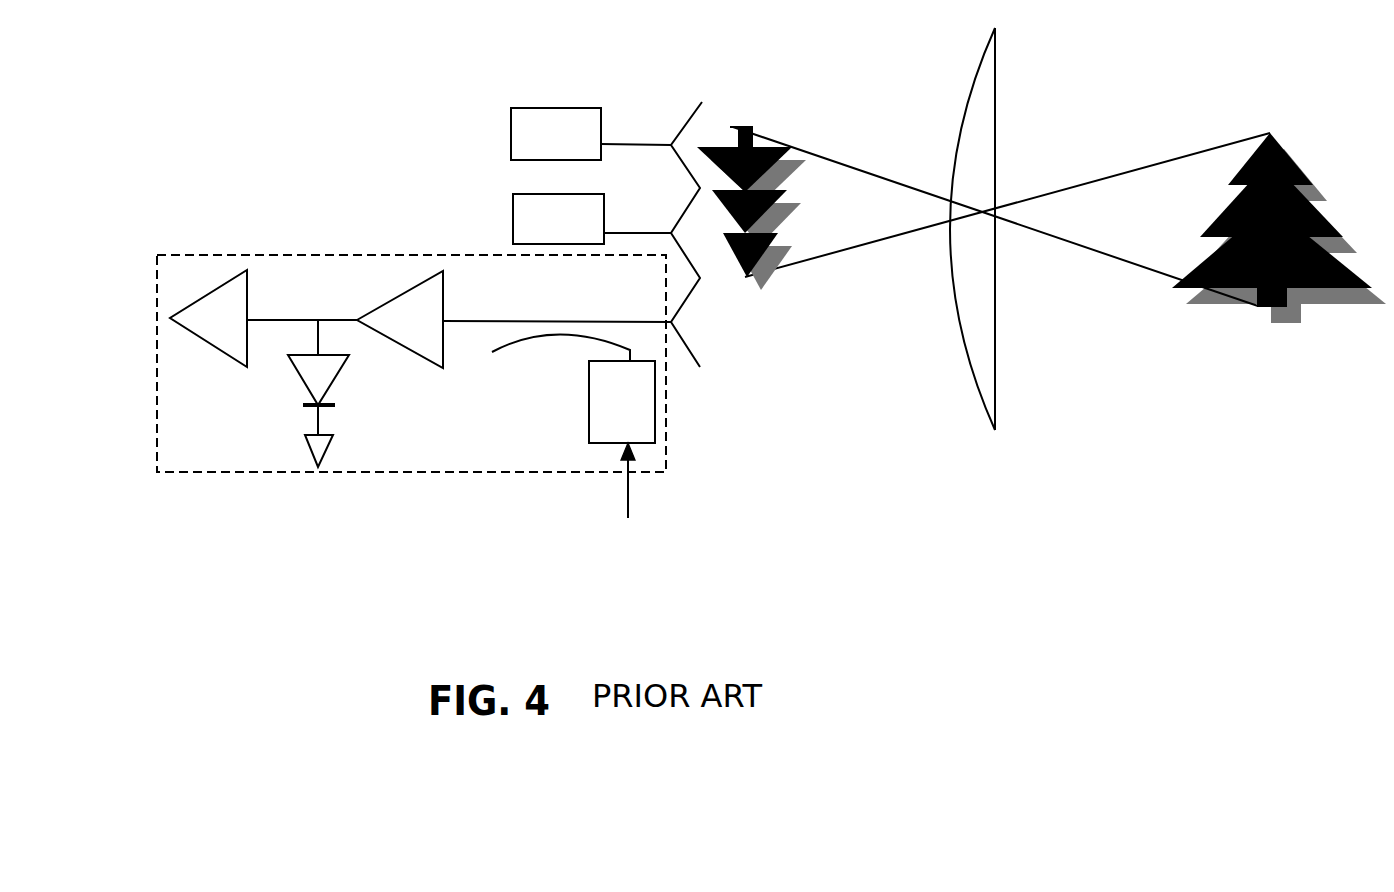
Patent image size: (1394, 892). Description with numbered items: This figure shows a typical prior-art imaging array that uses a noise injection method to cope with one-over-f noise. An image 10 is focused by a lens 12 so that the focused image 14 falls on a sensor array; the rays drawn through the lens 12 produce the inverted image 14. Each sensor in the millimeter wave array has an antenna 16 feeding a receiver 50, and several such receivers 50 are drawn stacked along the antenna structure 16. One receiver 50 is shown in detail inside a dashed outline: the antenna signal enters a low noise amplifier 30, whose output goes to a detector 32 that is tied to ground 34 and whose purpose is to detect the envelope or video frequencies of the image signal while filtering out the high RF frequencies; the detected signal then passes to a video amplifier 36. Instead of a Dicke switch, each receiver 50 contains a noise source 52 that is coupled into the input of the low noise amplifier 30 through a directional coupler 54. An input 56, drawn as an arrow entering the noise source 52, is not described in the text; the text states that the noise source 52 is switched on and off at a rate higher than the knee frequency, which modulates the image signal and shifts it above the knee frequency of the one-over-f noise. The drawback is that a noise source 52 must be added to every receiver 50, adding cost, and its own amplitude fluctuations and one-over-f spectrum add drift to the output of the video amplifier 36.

The image 10 is at (1272, 133).
The lens 12 is at (978, 303).
The focused image (image signal) 14 is at (755, 135).
The antenna 16 is at (685, 122).
The low noise amplifier 30 is at (423, 302).
The detector 32 is at (315, 372).
The ground 34 is at (320, 460).
The video amplifier 36 is at (235, 305).
The receiver 50 is at (543, 117).
The noise source 52 is at (637, 392).
The directional coupler 54 is at (568, 331).
The input signal arrow 56 is at (635, 492).